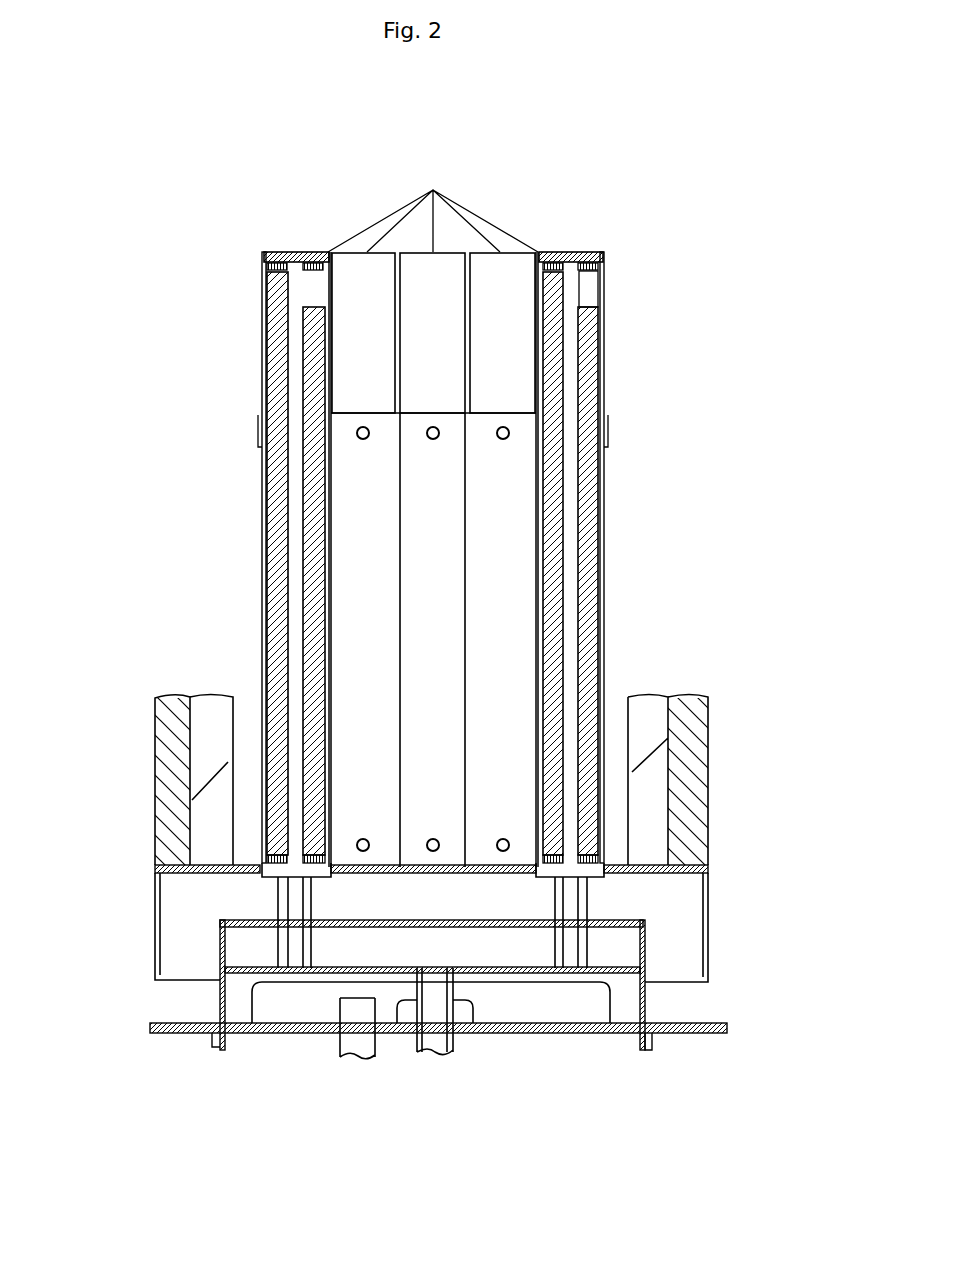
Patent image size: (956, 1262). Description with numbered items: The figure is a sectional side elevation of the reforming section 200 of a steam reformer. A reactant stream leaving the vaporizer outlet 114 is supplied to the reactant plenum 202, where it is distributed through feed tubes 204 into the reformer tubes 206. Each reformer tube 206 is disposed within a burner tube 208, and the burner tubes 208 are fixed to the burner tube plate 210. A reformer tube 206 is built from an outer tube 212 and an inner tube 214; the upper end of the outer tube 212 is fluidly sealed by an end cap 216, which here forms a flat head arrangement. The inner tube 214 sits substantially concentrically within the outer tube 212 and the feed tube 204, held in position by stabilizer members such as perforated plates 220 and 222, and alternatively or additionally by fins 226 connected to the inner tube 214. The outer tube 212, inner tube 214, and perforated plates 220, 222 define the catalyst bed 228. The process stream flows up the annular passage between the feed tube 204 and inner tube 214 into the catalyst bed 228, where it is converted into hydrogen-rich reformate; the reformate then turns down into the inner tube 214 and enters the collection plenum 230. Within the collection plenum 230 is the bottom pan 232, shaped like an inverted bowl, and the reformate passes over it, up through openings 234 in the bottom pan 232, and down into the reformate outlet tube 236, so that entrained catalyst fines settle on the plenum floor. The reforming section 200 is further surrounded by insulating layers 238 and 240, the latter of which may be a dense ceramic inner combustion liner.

The reforming section 200 is at (183, 147).
The reformer tubes 206 is at (433, 203).
The end cap 216 is at (282, 253).
The perforated plate 220 is at (602, 263).
The fins 226 is at (588, 293).
The outer tube 212 is at (265, 380).
The catalyst bed 228 is at (600, 553).
The inner tube 214 is at (282, 498).
The perforated plate 222 is at (603, 845).
The burner tubes 208 is at (433, 470).
The burner tube plate 210 is at (680, 872).
The insulating layer 238 is at (155, 757).
The insulating layer 240 is at (213, 818).
The feed tubes 204 is at (280, 902).
The reactant plenum 202 is at (397, 959).
The bottom pan 232 is at (255, 1005).
The collection plenum 230 is at (627, 1002).
The reformate outlet tube 236 is at (360, 1035).
The vaporizer outlet 114 is at (435, 1043).
The openings 234 is at (465, 1008).